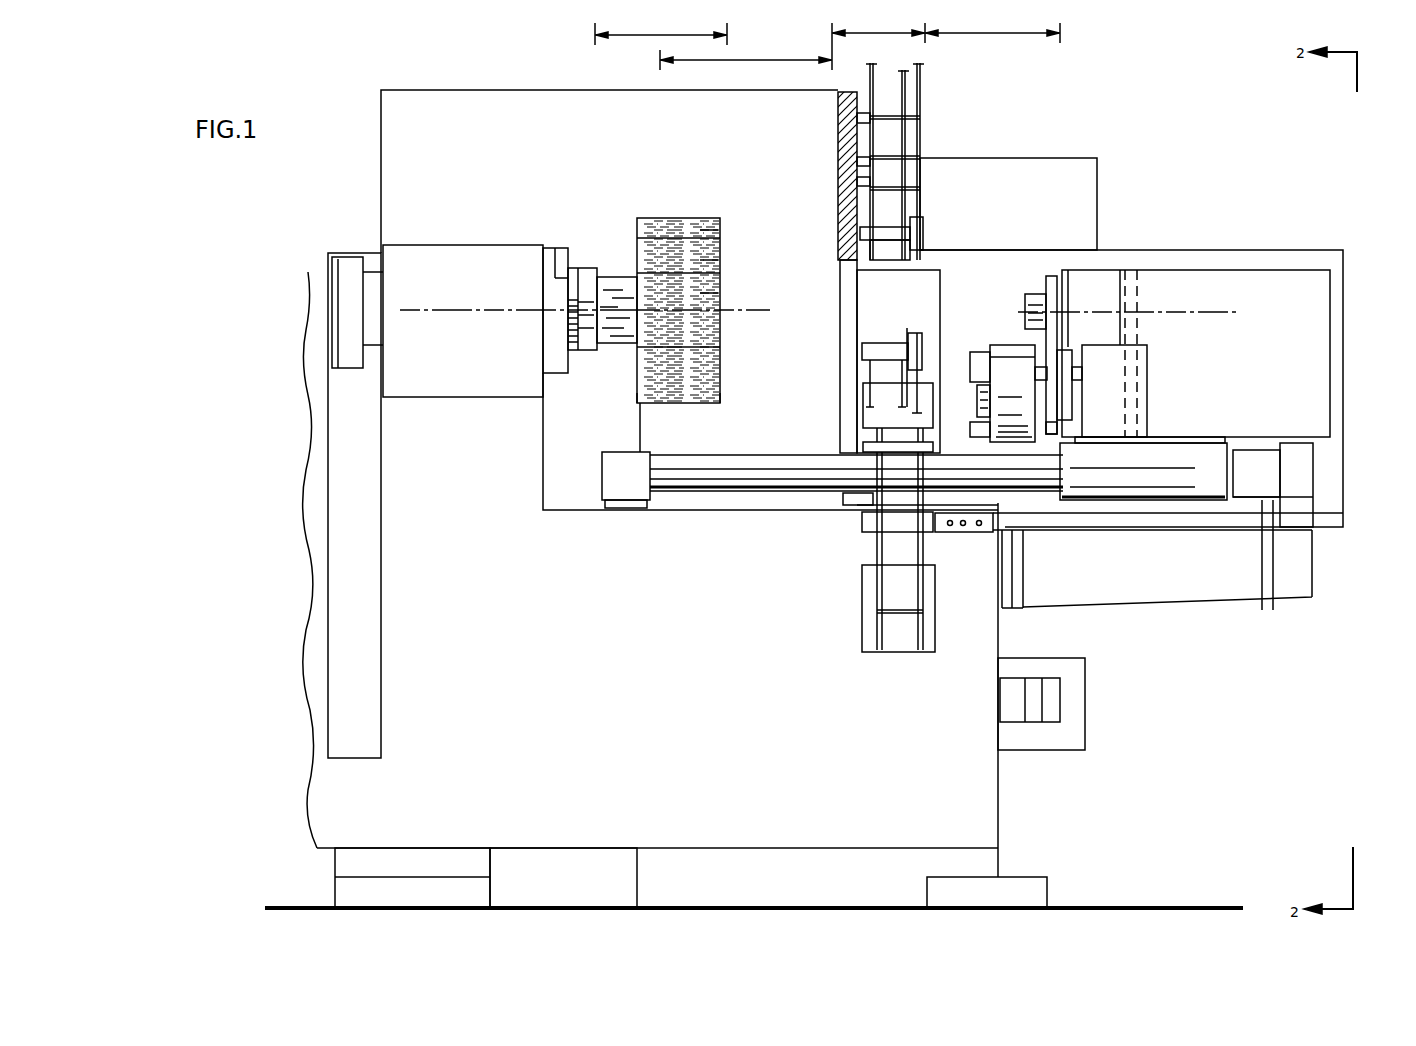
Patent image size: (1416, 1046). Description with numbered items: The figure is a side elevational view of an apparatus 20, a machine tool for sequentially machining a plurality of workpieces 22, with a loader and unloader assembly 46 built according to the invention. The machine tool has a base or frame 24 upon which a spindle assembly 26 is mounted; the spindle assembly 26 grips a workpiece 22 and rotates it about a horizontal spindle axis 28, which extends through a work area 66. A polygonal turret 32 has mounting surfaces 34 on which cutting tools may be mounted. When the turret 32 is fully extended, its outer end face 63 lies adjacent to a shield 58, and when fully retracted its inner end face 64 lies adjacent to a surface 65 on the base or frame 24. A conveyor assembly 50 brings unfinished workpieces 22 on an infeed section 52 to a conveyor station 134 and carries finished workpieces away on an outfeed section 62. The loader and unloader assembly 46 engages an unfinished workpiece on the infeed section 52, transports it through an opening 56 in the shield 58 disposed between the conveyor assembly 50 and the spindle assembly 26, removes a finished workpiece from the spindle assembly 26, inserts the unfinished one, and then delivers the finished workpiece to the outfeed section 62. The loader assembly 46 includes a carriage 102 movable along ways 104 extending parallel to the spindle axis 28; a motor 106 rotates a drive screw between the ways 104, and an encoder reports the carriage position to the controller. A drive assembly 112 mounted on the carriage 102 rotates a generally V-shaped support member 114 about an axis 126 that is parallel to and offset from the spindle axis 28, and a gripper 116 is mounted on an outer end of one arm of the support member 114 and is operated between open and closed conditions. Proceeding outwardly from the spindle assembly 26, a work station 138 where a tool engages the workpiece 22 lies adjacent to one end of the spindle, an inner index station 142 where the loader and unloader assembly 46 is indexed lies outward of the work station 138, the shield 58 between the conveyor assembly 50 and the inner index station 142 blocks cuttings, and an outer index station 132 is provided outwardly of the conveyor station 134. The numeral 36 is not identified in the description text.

The apparatus 20 is at (1242, 188).
The workpiece 22 is at (923, 231).
The base or frame 24 is at (978, 813).
The spindle assembly 26 is at (590, 338).
The spindle axis 28 is at (442, 316).
The polygonal turret 32 is at (668, 214).
The mounting surfaces 34 is at (713, 230).
The spindle axis 36 is at (740, 316).
The workpiece loader and unloader assembly 46 is at (1342, 280).
The conveyor assembly 50 is at (947, 114).
The infeed section 52 is at (920, 150).
The opening 56 is at (848, 298).
The shield 58 is at (830, 178).
The outfeed section 62 is at (922, 373).
The outer end face 63 is at (722, 397).
The inner end face 64 is at (636, 397).
The surface 65 is at (545, 465).
The work area 66 is at (1010, 268).
The carriage 102 is at (1140, 480).
The ways 104 is at (1043, 474).
The motor 106 is at (1272, 480).
The drive assembly 112 is at (1195, 290).
The support member 114 is at (1052, 283).
The gripper 116 is at (1006, 382).
The axis 126 is at (1210, 313).
The outer index station 132 is at (995, 40).
The conveyor station 134 is at (863, 35).
The work station 138 is at (628, 40).
The inner index station 142 is at (722, 62).